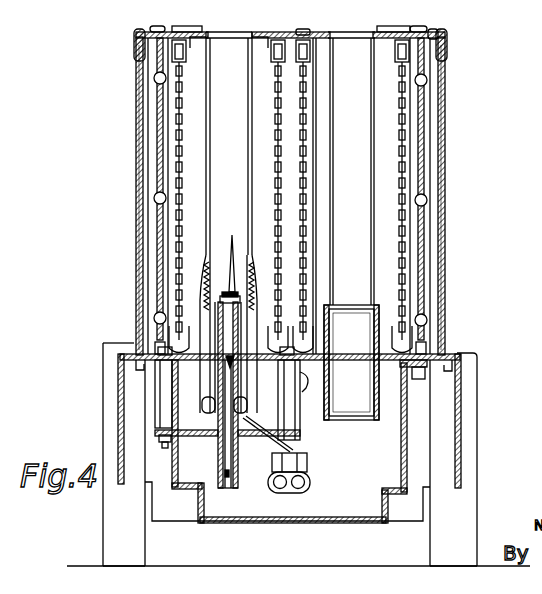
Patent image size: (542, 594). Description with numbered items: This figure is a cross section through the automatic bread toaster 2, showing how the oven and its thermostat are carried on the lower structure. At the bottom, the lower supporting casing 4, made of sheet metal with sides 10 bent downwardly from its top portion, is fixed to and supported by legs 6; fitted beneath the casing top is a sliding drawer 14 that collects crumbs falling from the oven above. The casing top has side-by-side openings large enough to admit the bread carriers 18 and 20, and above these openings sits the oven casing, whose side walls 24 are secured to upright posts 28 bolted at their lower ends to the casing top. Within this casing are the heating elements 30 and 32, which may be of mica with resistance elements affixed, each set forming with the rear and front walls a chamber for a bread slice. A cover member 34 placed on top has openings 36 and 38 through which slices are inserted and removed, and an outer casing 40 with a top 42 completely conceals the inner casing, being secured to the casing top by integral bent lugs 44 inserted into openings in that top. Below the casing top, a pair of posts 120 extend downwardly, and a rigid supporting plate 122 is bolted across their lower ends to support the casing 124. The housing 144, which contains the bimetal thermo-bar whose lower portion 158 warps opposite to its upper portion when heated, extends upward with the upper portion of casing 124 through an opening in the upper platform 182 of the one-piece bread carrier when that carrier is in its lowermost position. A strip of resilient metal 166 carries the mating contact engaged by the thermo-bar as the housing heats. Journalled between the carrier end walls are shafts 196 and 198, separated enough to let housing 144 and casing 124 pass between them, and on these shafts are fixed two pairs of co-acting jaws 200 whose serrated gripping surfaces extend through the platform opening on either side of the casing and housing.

The automatic bread toaster 2 is at (452, 87).
The lower supporting casing 4 is at (461, 422).
The legs 6 is at (108, 517).
The sides 10 is at (118, 438).
The sliding drawer 14 is at (265, 523).
The bread carrier 18 is at (334, 305).
The bread carrier 20 is at (207, 363).
The side walls 24 is at (160, 175).
The upright posts 28 is at (150, 145).
The heating elements 30 is at (183, 122).
The heating elements 32 is at (307, 134).
The cover member 34 is at (302, 29).
The opening 36 is at (238, 31).
The opening 38 is at (352, 31).
The outer casing 40 is at (136, 229).
The top 42 is at (432, 33).
The bent lugs 44 is at (136, 367).
The posts 120 is at (158, 400).
The supporting plate 122 is at (204, 437).
The casing 124 is at (240, 331).
The housing 144 is at (232, 235).
The lower portion 158 is at (233, 360).
The strip of resilient metal 166 is at (225, 454).
The upper platform 182 is at (361, 312).
The shaft 196 is at (190, 440).
The shaft 198 is at (276, 454).
The co-acting jaws 200 is at (199, 258).